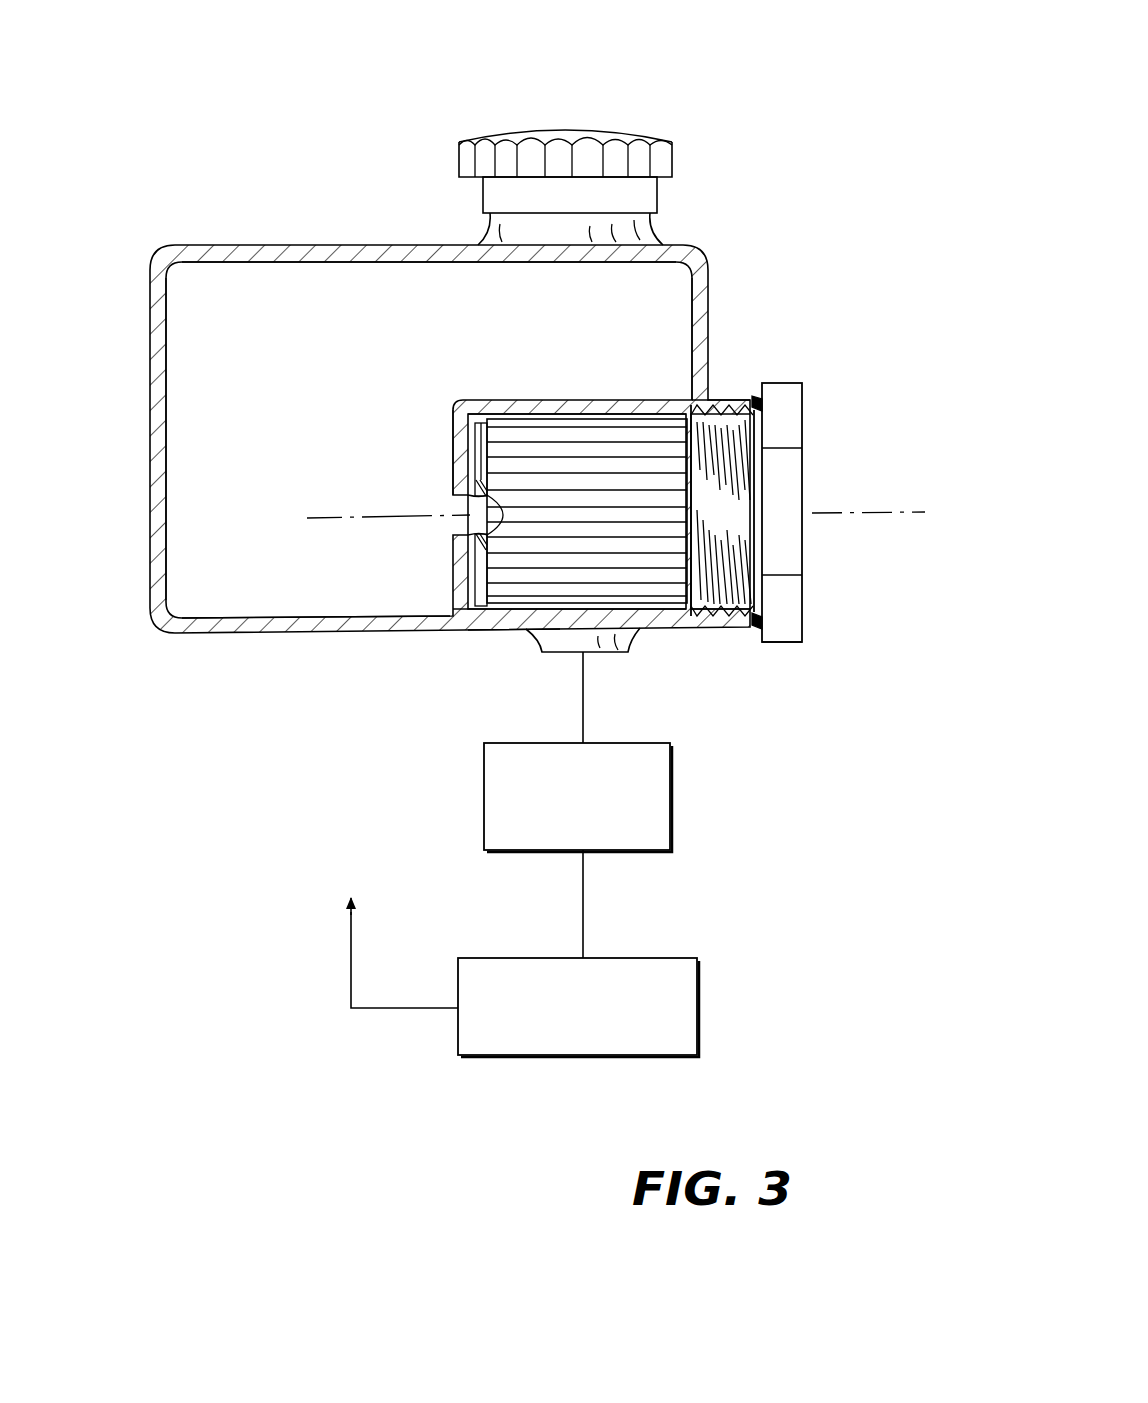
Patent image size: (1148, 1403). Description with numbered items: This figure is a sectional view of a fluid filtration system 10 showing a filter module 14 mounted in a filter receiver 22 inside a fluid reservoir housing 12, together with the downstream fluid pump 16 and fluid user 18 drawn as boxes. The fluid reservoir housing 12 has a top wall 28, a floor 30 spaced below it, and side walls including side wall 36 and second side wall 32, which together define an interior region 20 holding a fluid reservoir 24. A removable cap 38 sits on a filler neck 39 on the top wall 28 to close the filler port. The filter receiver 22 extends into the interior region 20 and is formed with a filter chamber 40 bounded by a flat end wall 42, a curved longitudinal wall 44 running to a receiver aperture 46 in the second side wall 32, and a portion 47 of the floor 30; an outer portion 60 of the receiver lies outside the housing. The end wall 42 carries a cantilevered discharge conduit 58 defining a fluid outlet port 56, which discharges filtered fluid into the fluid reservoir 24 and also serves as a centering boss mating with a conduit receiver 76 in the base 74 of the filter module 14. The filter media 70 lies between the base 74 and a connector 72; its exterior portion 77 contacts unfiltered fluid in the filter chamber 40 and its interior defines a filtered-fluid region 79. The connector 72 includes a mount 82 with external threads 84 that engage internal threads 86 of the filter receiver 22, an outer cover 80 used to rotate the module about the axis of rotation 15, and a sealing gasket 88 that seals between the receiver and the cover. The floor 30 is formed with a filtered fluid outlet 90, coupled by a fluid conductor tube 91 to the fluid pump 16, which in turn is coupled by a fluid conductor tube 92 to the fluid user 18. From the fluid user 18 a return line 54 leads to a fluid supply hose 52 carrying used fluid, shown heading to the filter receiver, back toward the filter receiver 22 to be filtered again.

The fluid filtration system 10 is at (232, 108).
The fluid reservoir housing 12 is at (218, 232).
The filter module 14 is at (803, 398).
The axis of rotation 15 is at (880, 512).
The fluid pump 16 is at (683, 797).
The fluid user 18 is at (712, 995).
The interior region 20 is at (662, 288).
The filter receiver 22 is at (520, 398).
The fluid reservoir 24 is at (205, 522).
The top wall 28 is at (372, 245).
The floor 30 is at (312, 633).
The second side wall 32 is at (700, 333).
The side wall 36 is at (152, 405).
The removable cap 38 is at (690, 122).
The filler neck 39 is at (652, 218).
The filter chamber 40 is at (470, 630).
The end wall 42 is at (455, 425).
The longitudinal wall 44 is at (597, 402).
The receiver aperture 46 is at (700, 395).
The portion of floor 47 is at (500, 630).
The fluid supply hose 52 is at (355, 935).
The return conduit 54 is at (445, 1010).
The fluid outlet port 56 is at (452, 540).
The discharge conduit 58 is at (478, 522).
The outer portion 60 is at (718, 628).
The filter media 70 is at (645, 565).
The connector 72 is at (772, 378).
The base 74 is at (481, 430).
The conduit receiver 76 is at (455, 520).
The exterior portion 77 is at (635, 435).
The filtered-fluid region 79 is at (497, 513).
The outer cover 80 is at (805, 650).
The mount 82 is at (745, 535).
The external threads 84 is at (753, 557).
The internal threads 86 is at (752, 582).
The sealing gasket 88 is at (760, 642).
The filtered fluid outlet 90 is at (568, 648).
The fluid conductor tube 91 is at (583, 708).
The fluid conductor tube 92 is at (585, 912).